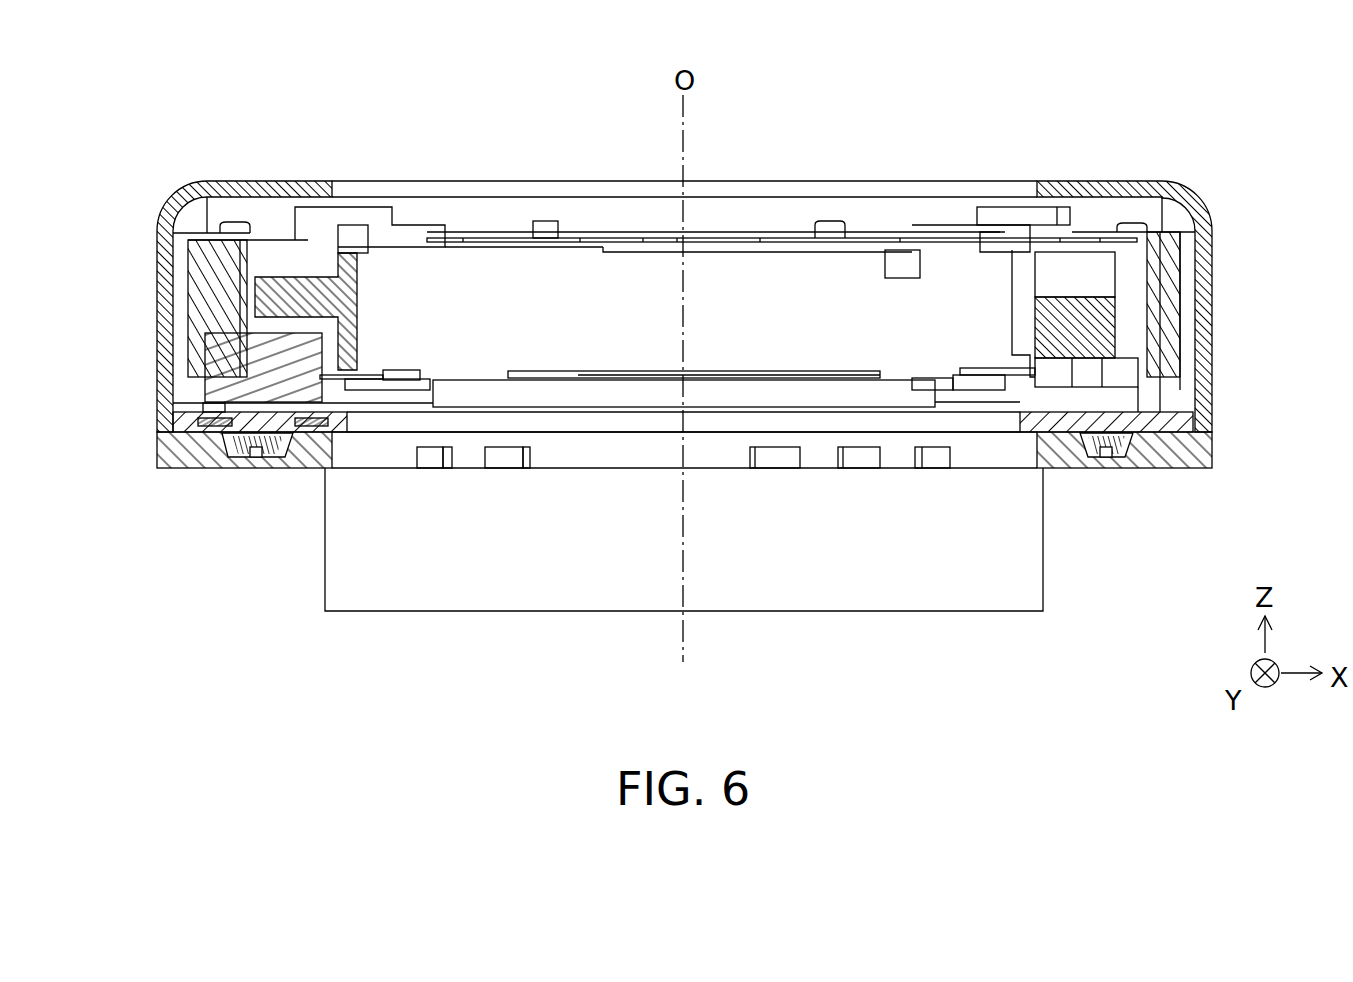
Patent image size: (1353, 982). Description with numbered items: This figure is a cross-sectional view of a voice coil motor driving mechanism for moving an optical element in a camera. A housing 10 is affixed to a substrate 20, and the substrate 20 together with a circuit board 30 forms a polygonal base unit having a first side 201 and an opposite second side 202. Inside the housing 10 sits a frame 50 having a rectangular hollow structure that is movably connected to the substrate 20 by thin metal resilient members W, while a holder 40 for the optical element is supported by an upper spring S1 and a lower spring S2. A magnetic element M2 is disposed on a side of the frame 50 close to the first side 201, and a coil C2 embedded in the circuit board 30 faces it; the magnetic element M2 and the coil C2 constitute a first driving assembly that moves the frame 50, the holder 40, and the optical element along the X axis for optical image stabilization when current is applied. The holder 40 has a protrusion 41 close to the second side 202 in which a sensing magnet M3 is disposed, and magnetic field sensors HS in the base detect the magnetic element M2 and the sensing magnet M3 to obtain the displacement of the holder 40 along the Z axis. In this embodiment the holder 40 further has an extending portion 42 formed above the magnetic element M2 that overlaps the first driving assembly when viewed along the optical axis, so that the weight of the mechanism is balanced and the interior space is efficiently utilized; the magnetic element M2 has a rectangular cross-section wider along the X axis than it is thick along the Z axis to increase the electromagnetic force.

The housing 10 is at (233, 190).
The substrate 20 is at (1198, 472).
The first side 201 is at (155, 455).
The second side 202 is at (1213, 458).
The circuit board 30 is at (187, 425).
The holder 40 is at (362, 290).
The protrusion 41 is at (1093, 288).
The extending portion 42 is at (293, 300).
The frame 50 is at (212, 293).
The magnetic element M2 is at (240, 357).
The sensing magnet M3 is at (1073, 323).
The resilient member W is at (200, 407).
The magnetic field sensor HS is at (248, 457).
The coil C2 is at (213, 427).
The upper spring S1 is at (567, 240).
The lower spring S2 is at (572, 380).